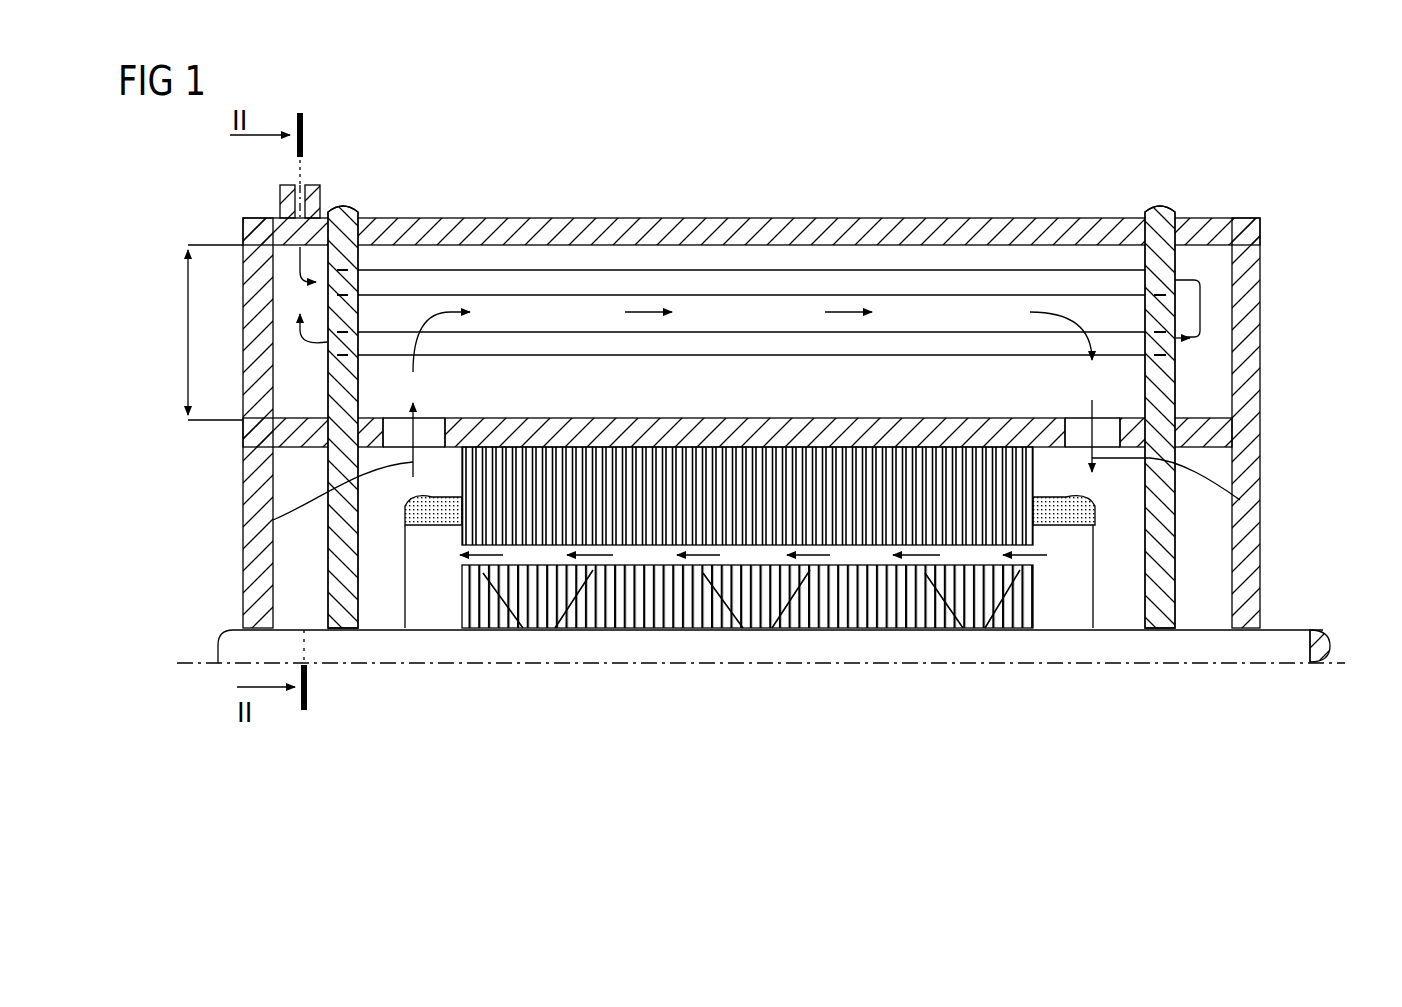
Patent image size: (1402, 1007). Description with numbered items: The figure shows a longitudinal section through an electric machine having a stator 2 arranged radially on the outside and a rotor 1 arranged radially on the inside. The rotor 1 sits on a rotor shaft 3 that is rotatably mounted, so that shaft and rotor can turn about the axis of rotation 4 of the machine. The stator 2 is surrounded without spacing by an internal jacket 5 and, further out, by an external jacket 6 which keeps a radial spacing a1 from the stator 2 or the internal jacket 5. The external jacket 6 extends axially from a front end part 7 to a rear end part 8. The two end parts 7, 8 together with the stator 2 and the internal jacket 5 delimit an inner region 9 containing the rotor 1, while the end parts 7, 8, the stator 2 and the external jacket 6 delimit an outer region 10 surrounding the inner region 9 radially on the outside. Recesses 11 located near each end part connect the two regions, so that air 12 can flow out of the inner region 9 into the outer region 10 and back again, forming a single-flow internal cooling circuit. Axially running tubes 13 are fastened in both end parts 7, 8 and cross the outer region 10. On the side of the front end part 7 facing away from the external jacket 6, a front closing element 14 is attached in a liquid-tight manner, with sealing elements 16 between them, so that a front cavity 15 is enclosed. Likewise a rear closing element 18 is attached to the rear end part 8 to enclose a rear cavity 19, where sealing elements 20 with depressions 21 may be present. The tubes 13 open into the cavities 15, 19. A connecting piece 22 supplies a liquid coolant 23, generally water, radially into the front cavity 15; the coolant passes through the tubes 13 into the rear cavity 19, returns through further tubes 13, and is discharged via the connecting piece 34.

The rotor 1 is at (855, 615).
The stator 2 is at (1090, 480).
The rotor shaft 3 is at (1290, 640).
The axis of rotation 4 is at (636, 668).
The internal jacket 5 is at (545, 440).
The external jacket 6 is at (1038, 236).
The front end part 7 is at (346, 617).
The rear end part 8 is at (1162, 615).
The inner region 9 is at (384, 604).
The outer region 10 is at (922, 268).
The recess 11 is at (430, 435).
The air 12 is at (428, 305).
The tube 13 is at (738, 338).
The front closing element 14 is at (262, 578).
The front cavity 15 is at (292, 355).
The sealing element 16 is at (345, 208).
The rear closing element 18 is at (1250, 548).
The rear cavity 19 is at (1215, 378).
The sealing element 20 is at (1248, 386).
The depression 21 is at (1164, 212).
The connecting piece 22 is at (248, 196).
The liquid coolant 23 is at (1202, 318).
The connecting piece 34 is at (283, 206).
The radial spacing a1 is at (188, 322).